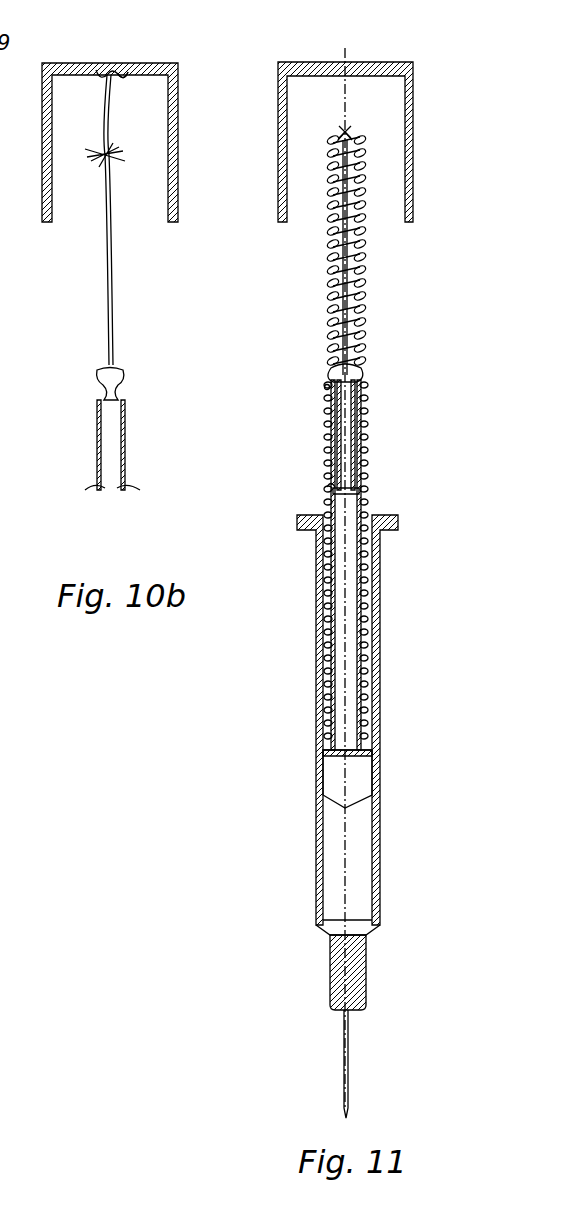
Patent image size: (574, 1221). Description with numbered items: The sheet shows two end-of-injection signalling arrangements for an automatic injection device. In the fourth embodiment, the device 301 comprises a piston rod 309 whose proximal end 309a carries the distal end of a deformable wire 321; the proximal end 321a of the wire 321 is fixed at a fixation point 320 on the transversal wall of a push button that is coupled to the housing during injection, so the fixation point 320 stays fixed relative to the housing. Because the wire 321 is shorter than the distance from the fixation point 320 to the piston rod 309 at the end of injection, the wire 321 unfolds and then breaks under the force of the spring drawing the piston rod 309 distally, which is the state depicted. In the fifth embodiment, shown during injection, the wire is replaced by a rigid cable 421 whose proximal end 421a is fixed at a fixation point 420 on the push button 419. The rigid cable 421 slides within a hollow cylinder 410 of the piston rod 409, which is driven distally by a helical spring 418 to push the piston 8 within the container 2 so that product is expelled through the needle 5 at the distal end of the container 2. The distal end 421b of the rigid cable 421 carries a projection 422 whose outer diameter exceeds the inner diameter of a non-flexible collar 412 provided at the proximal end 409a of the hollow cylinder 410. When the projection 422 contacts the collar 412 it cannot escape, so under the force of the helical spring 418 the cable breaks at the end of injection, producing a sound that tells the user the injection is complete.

In FIG. 10B, the device 301 is at (182, 90).
In FIG. 10B, the fixation point 320 is at (92, 75).
In FIG. 10B, the proximal end of the wire 321a is at (124, 76).
In FIG. 10B, the wire 321 is at (108, 262).
In FIG. 10B, the proximal end of the piston rod 309a is at (95, 377).
In FIG. 10B, the piston rod 309 is at (97, 420).
In FIG. 11, the push button 419 is at (420, 90).
In FIG. 11, the fixation point 420 is at (348, 130).
In FIG. 11, the proximal end of the rigid cable 421a is at (360, 140).
In FIG. 11, the rigid cable 421 is at (368, 282).
In FIG. 11, the helical spring 418 is at (368, 310).
In FIG. 11, the proximal end of the hollow cylinder 409a is at (374, 373).
In FIG. 11, the collar 412 is at (320, 388).
In FIG. 11, the piston rod 409 is at (358, 440).
In FIG. 11, the distal end of the rigid cable 421b is at (330, 487).
In FIG. 11, the hollow cylinder 410 is at (362, 477).
In FIG. 11, the projection 422 is at (362, 495).
In FIG. 11, the container 2 is at (380, 610).
In FIG. 11, the piston 8 is at (355, 778).
In FIG. 11, the needle 5 is at (362, 978).